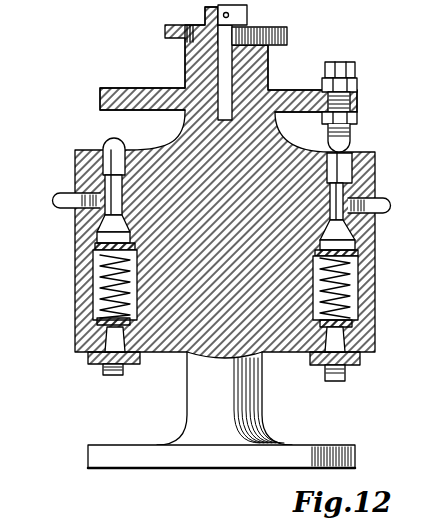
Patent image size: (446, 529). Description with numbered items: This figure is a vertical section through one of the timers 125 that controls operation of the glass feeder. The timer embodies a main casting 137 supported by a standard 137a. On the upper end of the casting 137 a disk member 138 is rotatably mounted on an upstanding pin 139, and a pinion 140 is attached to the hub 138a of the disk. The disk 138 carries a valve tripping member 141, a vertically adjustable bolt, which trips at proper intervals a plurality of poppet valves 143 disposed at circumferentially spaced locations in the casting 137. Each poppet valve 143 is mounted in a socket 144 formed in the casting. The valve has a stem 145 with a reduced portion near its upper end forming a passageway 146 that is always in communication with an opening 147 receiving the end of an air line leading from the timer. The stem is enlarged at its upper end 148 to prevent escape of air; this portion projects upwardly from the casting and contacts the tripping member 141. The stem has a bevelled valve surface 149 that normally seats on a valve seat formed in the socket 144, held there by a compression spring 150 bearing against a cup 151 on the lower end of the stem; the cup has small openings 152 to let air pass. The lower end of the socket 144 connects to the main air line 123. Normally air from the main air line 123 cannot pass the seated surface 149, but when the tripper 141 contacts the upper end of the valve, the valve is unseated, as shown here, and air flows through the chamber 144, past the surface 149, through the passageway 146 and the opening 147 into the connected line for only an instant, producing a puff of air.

The main air line 123 is at (342, 377).
The timer 125 is at (352, 447).
The main casting 137 is at (287, 330).
The standard 137a is at (240, 408).
The disk member 138 is at (128, 92).
The hub 138a is at (255, 63).
The upstanding pin 139 is at (222, 72).
The pinion 140 is at (287, 30).
The valve tripping member 141 is at (347, 132).
The poppet valve 143 is at (120, 142).
The socket 144 is at (352, 292).
The stem 145 is at (372, 220).
The passageway 146 is at (372, 184).
The opening 147 is at (380, 206).
The enlarged upper end 148 is at (372, 163).
The bevelled valve surface 149 is at (372, 240).
The compression spring 150 is at (350, 313).
The cup 151 is at (93, 257).
The small openings 152 is at (95, 246).